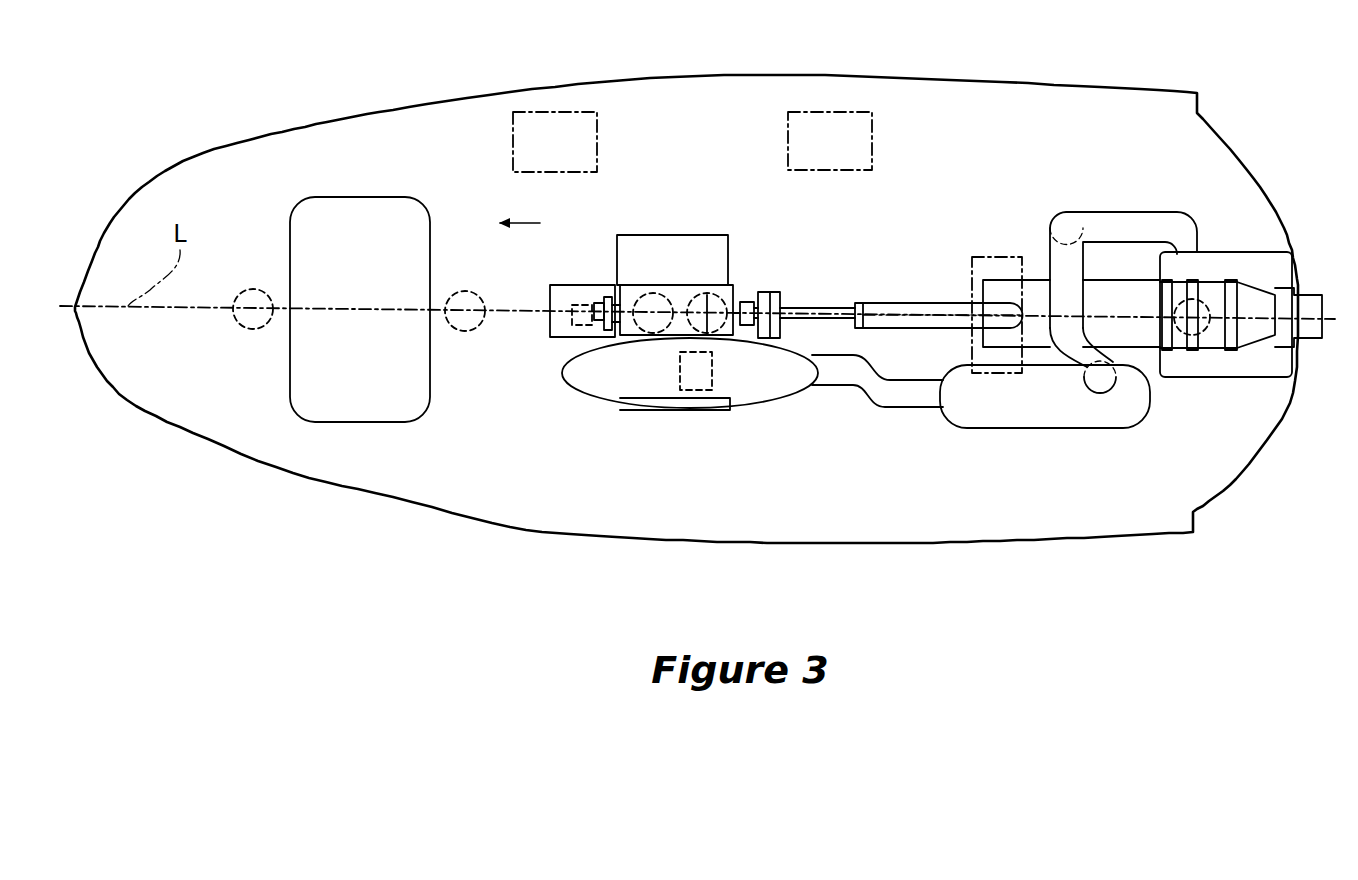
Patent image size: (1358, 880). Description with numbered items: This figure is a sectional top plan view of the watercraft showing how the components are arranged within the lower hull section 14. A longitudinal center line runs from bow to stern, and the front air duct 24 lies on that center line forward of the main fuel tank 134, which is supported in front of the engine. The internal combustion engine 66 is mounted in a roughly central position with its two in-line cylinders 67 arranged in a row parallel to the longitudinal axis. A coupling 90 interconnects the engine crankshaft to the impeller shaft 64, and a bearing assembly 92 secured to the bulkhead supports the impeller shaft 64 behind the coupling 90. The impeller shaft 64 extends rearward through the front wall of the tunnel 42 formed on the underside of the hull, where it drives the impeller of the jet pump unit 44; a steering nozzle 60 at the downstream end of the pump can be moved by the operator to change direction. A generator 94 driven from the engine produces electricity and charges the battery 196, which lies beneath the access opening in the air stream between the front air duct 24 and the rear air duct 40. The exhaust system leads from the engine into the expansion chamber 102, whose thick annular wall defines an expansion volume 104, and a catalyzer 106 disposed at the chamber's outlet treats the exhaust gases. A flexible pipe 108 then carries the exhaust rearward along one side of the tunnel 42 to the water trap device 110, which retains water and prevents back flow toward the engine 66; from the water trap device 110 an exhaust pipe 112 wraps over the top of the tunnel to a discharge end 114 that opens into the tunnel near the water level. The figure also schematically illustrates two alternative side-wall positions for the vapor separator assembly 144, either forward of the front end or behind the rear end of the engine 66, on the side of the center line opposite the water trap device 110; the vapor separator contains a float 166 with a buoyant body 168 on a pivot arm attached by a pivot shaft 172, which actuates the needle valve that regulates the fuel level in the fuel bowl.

The lower hull section 14 is at (253, 135).
The air duct 24 is at (255, 330).
The rear air duct 40 is at (1203, 332).
The tunnel 42 is at (1247, 260).
The jet pump unit 44 is at (1171, 362).
The steering nozzle 60 is at (1310, 332).
The impeller shaft 64 is at (835, 303).
The internal combustion engine 66 is at (705, 222).
The in-line cylinders 67 is at (637, 339).
The coupling 90 is at (766, 341).
The bearing assembly 92 is at (798, 336).
The generator 94 is at (742, 300).
The expansion chamber 102 is at (645, 411).
The expansion volume 104 is at (738, 370).
The catalyzer 106 is at (697, 380).
The flexible pipe 108 is at (857, 388).
The water trap device 110 is at (1060, 428).
The exhaust pipe 112 is at (1112, 222).
The discharge end 114 is at (1188, 262).
The main fuel tank 134 is at (377, 193).
The vapor separator assembly 144 is at (562, 110).
The float 166 is at (567, 298).
The buoyant body 168 is at (570, 330).
The pivot shaft 172 is at (607, 292).
The battery 196 is at (998, 255).